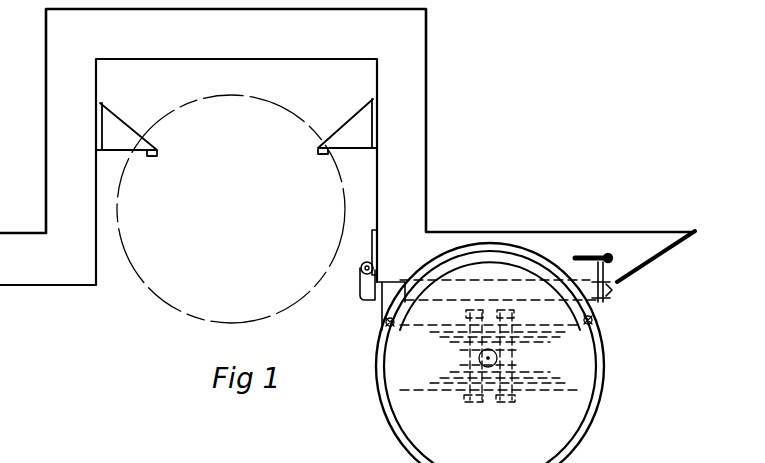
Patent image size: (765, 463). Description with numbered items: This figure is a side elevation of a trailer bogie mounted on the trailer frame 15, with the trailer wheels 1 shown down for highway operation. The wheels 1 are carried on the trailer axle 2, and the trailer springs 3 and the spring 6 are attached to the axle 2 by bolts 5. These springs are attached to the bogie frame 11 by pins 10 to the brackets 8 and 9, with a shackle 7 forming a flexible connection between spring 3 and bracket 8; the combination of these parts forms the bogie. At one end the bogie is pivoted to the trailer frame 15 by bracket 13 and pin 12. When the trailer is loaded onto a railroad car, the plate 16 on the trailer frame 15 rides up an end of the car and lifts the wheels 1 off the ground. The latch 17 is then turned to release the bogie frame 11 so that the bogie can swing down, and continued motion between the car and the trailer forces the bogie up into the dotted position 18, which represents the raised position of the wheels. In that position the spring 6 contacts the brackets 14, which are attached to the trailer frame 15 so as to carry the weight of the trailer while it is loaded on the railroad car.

The trailer wheels 1 is at (592, 417).
The trailer axle 2 is at (488, 367).
The trailer springs 3 is at (557, 335).
The bolts 5 is at (470, 355).
The spring 6 is at (518, 395).
The shackle 7 is at (594, 312).
The bracket 8 is at (610, 291).
The bracket 9 is at (392, 291).
The pins 10 is at (388, 326).
The frame 11 is at (528, 294).
The pin 12 is at (360, 293).
The bracket 13 is at (371, 240).
The brackets 14 is at (147, 157).
The trailer frame 15 is at (440, 150).
The plate 16 is at (660, 261).
The latch 17 is at (609, 266).
The dotted position 18 is at (202, 323).